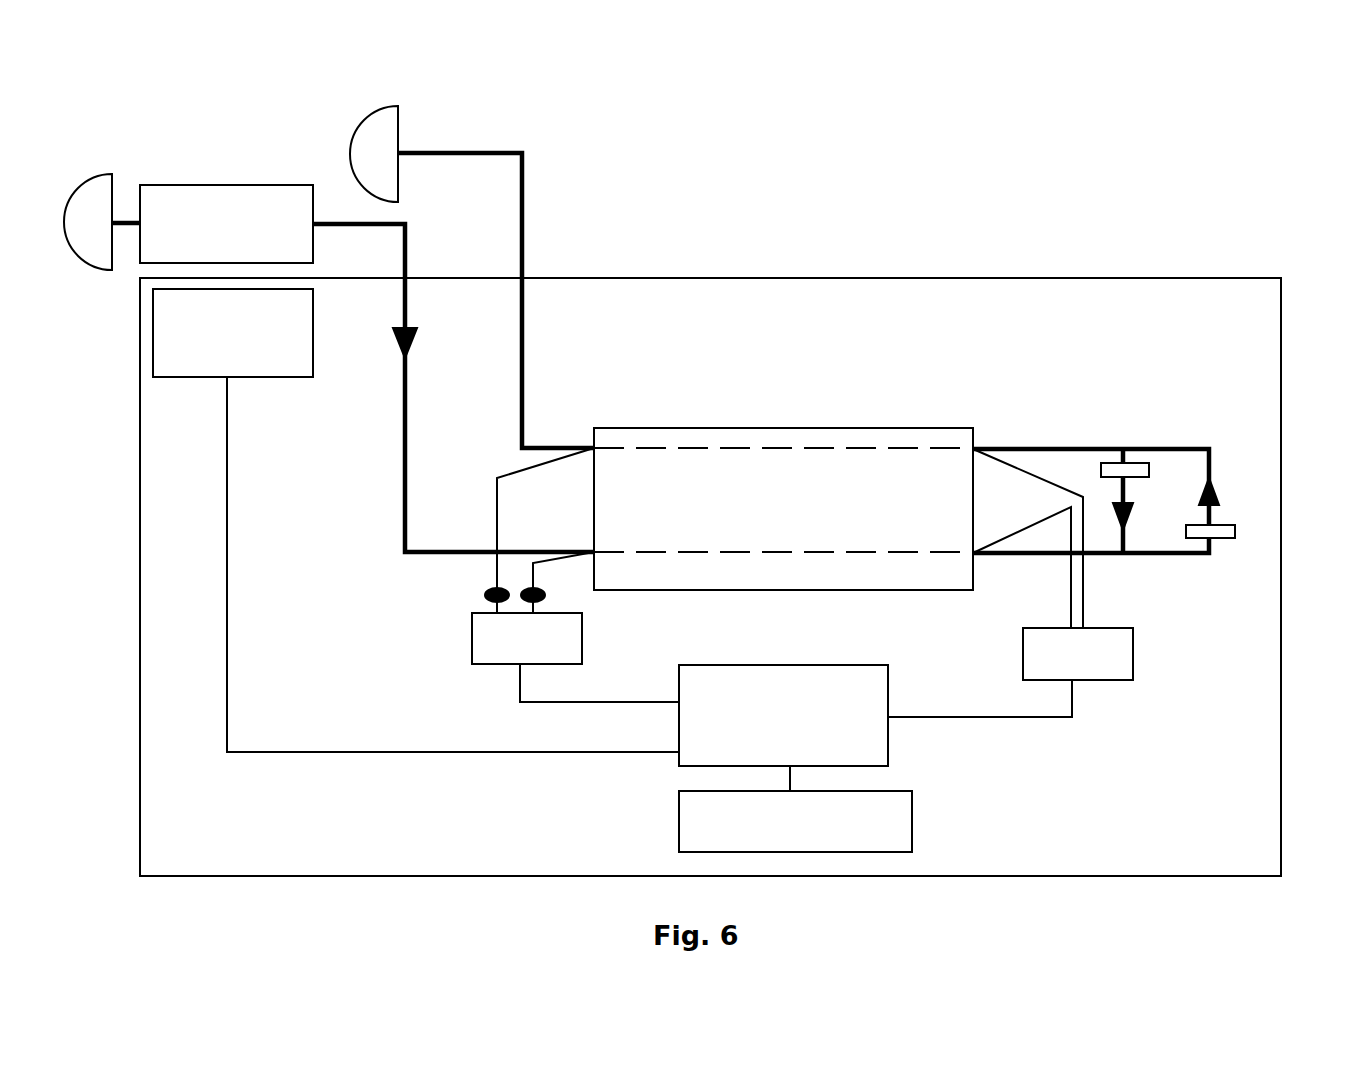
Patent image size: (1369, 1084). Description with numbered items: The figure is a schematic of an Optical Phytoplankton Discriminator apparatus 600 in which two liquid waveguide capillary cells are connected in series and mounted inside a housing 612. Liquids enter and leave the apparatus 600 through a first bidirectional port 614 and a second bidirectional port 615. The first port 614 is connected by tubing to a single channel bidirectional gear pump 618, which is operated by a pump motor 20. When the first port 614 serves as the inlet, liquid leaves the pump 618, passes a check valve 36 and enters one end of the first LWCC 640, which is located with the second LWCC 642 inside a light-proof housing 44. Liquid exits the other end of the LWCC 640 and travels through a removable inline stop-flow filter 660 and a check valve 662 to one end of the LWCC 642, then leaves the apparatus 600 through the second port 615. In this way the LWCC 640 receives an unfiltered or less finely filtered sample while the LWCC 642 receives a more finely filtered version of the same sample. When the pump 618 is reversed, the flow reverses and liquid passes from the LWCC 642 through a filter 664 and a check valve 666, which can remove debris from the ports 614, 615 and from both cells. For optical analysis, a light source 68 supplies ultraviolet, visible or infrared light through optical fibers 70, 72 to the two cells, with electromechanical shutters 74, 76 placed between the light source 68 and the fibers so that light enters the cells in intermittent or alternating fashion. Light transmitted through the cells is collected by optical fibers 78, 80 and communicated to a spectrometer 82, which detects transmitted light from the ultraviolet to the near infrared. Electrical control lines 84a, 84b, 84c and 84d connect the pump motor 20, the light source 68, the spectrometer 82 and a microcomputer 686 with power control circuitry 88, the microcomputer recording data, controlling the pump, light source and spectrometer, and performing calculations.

The Optical Phytoplankton Discriminator apparatus 600 is at (1106, 250).
The housing 612 is at (1281, 677).
The first bidirectional port 614 is at (82, 192).
The second bidirectional port 615 is at (364, 122).
The single channel bidirectional gear pump 618 is at (205, 203).
The pump motor 20 is at (165, 334).
The check valve 36 is at (398, 338).
The light-proof housing 44 is at (697, 425).
The LWCC 640 is at (770, 550).
The LWCC 642 is at (770, 446).
The optical fiber 70 is at (529, 467).
The optical fiber 72 is at (558, 560).
The electromechanical shutter 74 is at (485, 596).
The electromechanical shutter 76 is at (545, 598).
The light source 68 is at (562, 664).
The optical fiber 78 is at (1084, 598).
The optical fiber 80 is at (1070, 592).
The spectrometer 82 is at (1115, 680).
The electrical control line 84a is at (358, 752).
The electrical control line 84b is at (560, 702).
The electrical control line 84c is at (1010, 717).
The electrical control line 84d is at (790, 782).
The power control circuitry 88 is at (888, 693).
The power supply 686 is at (912, 820).
The removable inline stop-flow filter 660 is at (1235, 531).
The check valve 662 is at (1212, 482).
The filter 664 is at (1110, 465).
The check valve 666 is at (1130, 520).